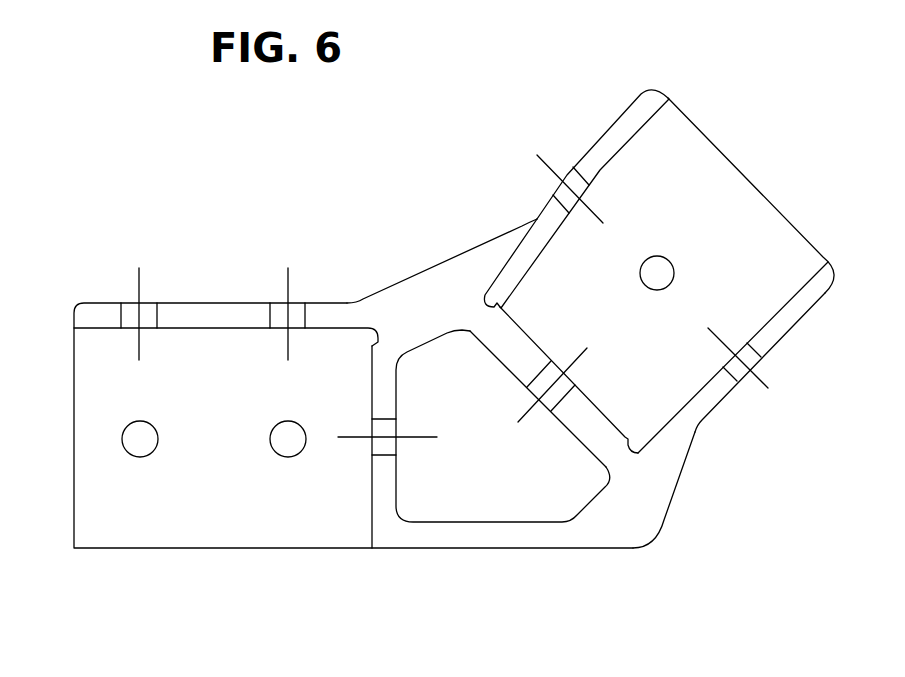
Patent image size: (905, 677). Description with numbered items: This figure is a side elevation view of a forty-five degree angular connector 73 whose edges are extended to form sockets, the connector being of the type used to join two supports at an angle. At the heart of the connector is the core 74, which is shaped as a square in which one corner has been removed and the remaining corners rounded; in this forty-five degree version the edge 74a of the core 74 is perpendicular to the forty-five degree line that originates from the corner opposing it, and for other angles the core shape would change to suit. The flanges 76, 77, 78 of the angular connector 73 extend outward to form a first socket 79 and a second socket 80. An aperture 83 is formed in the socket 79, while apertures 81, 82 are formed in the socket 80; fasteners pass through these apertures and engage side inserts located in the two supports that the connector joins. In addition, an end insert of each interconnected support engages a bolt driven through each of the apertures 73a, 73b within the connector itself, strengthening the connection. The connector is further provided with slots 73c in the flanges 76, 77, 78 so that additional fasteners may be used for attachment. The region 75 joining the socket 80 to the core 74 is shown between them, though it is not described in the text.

The angular connector 73 is at (695, 569).
The aperture 73a is at (374, 452).
The aperture 73b is at (554, 392).
The slot 73c is at (134, 298).
The core 74 is at (452, 429).
The edge of core 74a is at (588, 449).
The connecting arm 75 is at (436, 292).
The flange 76 is at (92, 334).
The flange 77 is at (630, 104).
The flange 78 is at (822, 300).
The socket 79 is at (757, 244).
The socket 80 is at (187, 521).
The aperture 81 is at (128, 456).
The aperture 82 is at (278, 457).
The aperture 83 is at (667, 258).